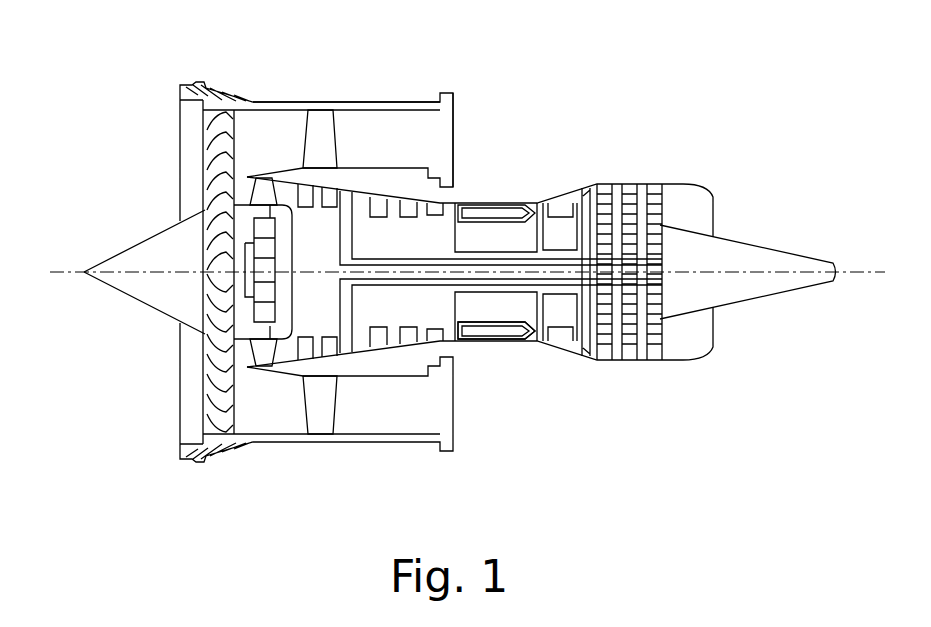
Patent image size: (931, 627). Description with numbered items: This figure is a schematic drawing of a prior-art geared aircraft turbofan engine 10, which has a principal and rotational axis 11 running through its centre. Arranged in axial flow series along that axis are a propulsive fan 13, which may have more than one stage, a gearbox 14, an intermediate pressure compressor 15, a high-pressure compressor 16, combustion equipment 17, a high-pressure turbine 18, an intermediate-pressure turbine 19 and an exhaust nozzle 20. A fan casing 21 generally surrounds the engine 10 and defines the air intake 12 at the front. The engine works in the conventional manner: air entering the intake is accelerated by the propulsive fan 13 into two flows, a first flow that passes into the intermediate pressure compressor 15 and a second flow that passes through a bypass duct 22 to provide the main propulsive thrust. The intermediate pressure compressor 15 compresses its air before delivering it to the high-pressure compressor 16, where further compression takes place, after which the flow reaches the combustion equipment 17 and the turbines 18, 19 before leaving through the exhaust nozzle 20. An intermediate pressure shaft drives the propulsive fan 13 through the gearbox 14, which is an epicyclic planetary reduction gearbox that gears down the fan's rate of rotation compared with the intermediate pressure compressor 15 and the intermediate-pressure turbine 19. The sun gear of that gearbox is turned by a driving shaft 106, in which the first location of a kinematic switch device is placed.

The geared turbofan engine 10 is at (712, 110).
The principal and rotational axis 11 is at (68, 270).
The air intake / nacelle 12 is at (156, 126).
The propulsive fan 13 is at (200, 400).
The gearbox 14 is at (262, 340).
The intermediate pressure compressor 15 is at (300, 186).
The high-pressure compressor 16 is at (443, 224).
The combustion equipment 17 is at (493, 337).
The high-pressure turbine 18 is at (578, 200).
The intermediate-pressure turbine 19 is at (630, 185).
The exhaust nozzle 20 is at (708, 220).
The fan casing 21 is at (393, 100).
The bypass duct 22 is at (456, 128).
The driving shaft 106 is at (292, 252).